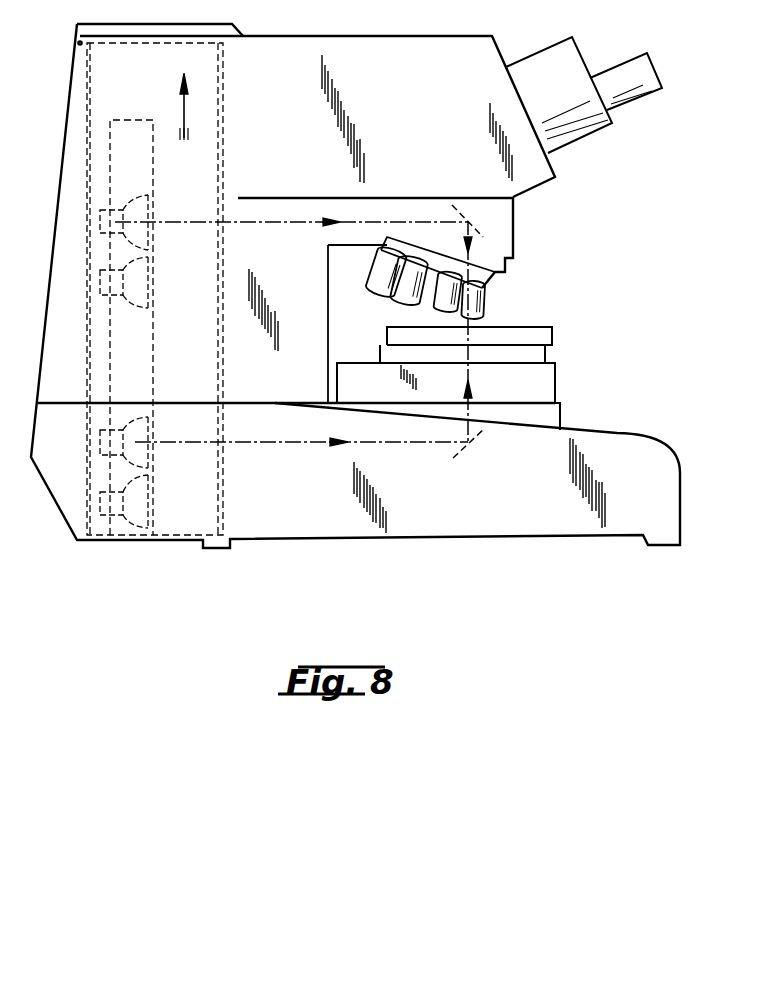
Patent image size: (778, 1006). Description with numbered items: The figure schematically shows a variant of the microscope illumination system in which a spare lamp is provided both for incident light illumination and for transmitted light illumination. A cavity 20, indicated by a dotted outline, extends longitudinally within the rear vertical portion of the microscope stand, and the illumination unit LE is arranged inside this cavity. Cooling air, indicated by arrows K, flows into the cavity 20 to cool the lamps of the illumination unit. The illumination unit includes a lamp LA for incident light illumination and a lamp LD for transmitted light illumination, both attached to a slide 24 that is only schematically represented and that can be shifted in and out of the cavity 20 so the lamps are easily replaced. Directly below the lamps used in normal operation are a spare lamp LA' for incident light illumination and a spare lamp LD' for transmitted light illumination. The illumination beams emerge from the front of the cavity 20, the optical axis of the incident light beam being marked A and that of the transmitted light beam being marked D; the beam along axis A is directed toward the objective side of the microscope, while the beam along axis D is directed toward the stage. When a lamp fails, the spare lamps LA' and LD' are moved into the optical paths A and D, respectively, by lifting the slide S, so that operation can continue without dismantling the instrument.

The arrows indicating cooling air flow K is at (223, 97).
The cavity 20 is at (223, 173).
The illumination unit LE is at (117, 120).
The slide 24 is at (147, 368).
The slide S is at (192, 106).
The lamp for incident light illumination LA is at (151, 209).
The spare lamp for incident light illumination LA' is at (151, 297).
The lamp for transmitted light illumination LD is at (154, 452).
The spare lamp for transmitted light illumination LD' is at (126, 535).
The optical axis of the incident light illumination beam A is at (400, 220).
The optical axis of the transmitted light illumination beam D is at (313, 442).